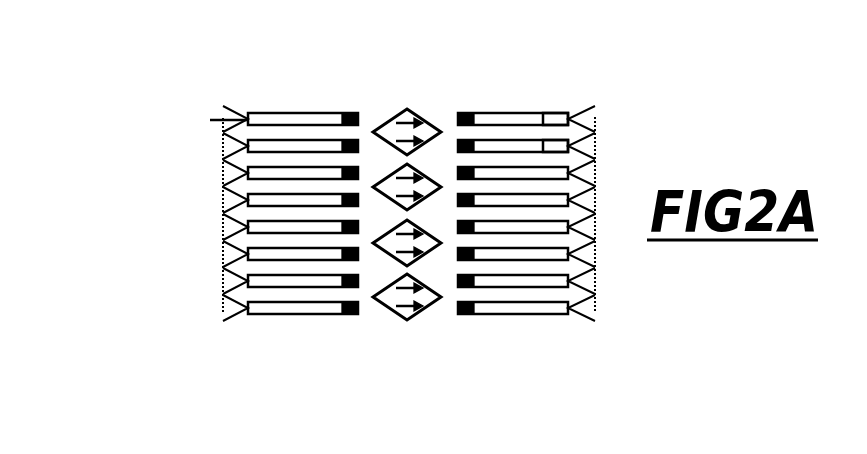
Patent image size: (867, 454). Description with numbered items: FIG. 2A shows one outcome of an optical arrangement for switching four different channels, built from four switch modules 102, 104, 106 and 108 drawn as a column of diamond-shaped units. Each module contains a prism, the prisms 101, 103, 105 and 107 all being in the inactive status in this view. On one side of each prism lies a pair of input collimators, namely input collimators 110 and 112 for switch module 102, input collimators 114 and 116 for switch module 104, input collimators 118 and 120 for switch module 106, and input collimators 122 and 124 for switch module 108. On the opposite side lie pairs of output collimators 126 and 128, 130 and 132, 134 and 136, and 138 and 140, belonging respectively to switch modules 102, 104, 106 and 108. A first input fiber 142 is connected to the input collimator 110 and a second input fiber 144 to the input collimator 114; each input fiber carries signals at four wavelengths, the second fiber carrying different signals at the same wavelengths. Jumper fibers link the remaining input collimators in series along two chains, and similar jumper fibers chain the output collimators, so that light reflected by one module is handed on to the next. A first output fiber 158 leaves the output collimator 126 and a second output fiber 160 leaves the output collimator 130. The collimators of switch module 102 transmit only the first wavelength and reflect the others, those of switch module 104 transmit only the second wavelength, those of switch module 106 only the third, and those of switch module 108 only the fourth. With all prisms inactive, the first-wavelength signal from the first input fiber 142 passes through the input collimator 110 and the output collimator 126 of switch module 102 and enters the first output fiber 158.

The prism 101 is at (394, 92).
The switch module 102 is at (419, 107).
The prism 103 is at (373, 187).
The switch module 104 is at (443, 176).
The prism 105 is at (441, 245).
The switch module 106 is at (375, 250).
The prism 107 is at (434, 343).
The switch module 108 is at (402, 322).
The input collimator 110 is at (282, 81).
The input collimator 112 is at (238, 125).
The input collimator 114 is at (238, 155).
The input collimator 116 is at (225, 247).
The input collimator 118 is at (225, 278).
The input collimator 120 is at (225, 309).
The input collimator 122 is at (185, 247).
The input collimator 124 is at (296, 346).
The output collimator 126 is at (527, 88).
The output collimator 128 is at (579, 101).
The output collimator 130 is at (583, 132).
The output collimator 132 is at (586, 173).
The output collimator 134 is at (639, 260).
The output collimator 136 is at (646, 291).
The output collimator 138 is at (630, 319).
The output collimator 140 is at (540, 345).
The first input fiber 142 is at (178, 91).
The second input fiber 144 is at (138, 213).
The first output fiber 158 is at (638, 197).
The second output fiber 160 is at (662, 138).